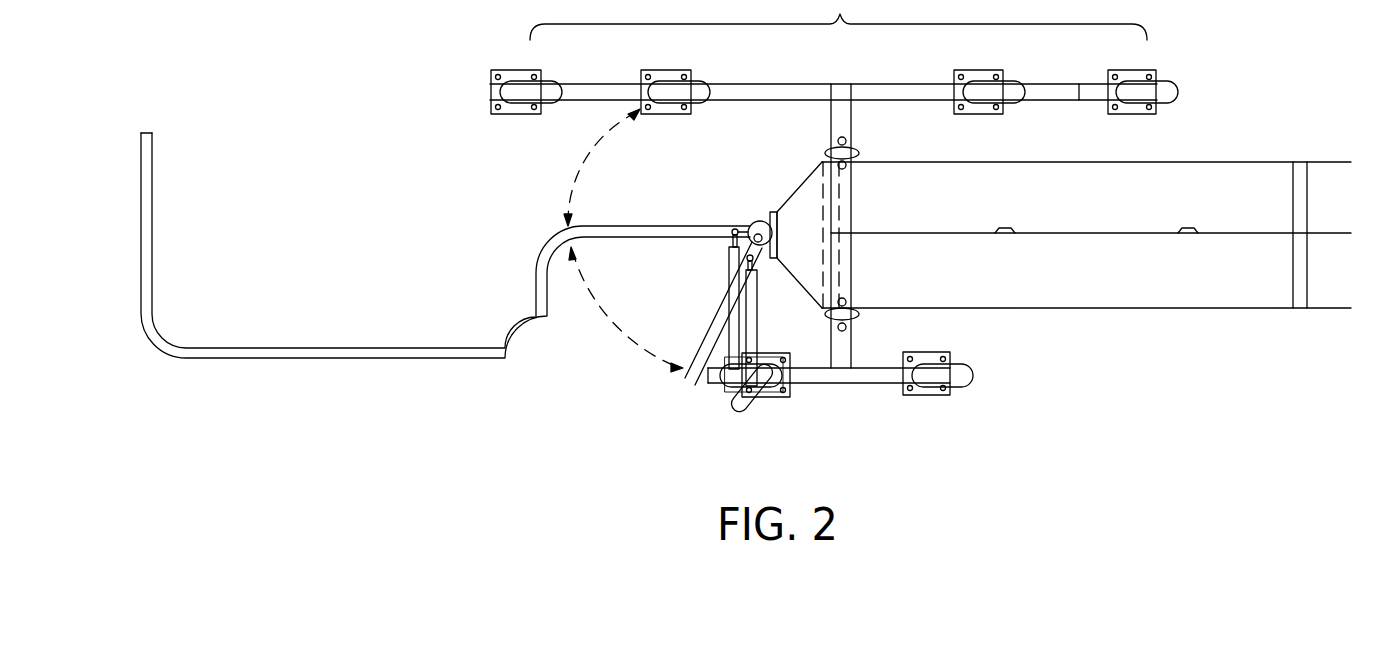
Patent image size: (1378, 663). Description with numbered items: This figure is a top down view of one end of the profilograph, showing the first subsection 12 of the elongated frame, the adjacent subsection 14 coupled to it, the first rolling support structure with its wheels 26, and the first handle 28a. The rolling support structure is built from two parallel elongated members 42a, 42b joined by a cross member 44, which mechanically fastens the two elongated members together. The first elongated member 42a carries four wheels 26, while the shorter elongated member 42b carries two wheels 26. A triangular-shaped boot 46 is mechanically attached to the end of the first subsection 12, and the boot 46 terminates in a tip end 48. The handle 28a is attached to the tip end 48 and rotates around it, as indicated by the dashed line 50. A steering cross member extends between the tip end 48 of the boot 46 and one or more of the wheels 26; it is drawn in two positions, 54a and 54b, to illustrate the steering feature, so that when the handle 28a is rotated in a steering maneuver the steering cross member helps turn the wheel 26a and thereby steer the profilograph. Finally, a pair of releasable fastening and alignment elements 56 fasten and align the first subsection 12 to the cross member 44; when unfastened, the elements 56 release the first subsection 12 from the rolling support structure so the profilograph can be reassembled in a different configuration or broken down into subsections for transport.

The first subsection 12 is at (1265, 310).
The second subsection 14 is at (1333, 310).
The wheels 26 is at (543, 113).
The steered wheel 26a is at (750, 412).
The first handle 28a is at (324, 360).
The first elongated member 42a is at (786, 84).
The second elongated member 42b is at (841, 384).
The cross member 44 is at (852, 118).
The triangular-shaped boot 46 is at (781, 256).
The tip end 48 is at (758, 222).
The dashed line 50 is at (590, 148).
The steering cross member (first position) 54a is at (726, 270).
The steering cross member (second position) 54b is at (757, 318).
The releasable fastening and alignment elements 56 is at (860, 152).